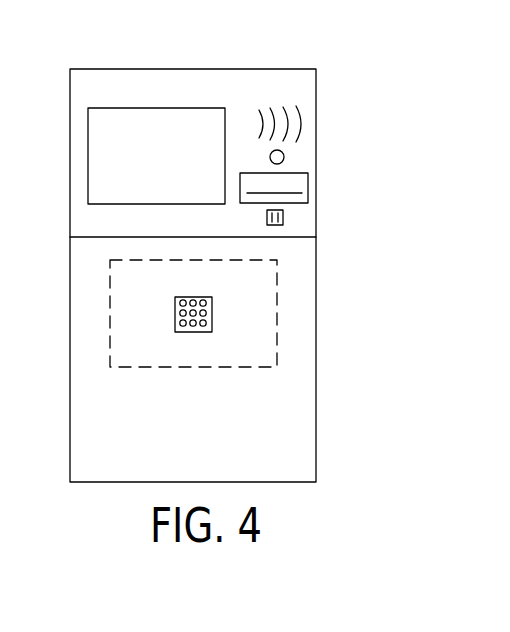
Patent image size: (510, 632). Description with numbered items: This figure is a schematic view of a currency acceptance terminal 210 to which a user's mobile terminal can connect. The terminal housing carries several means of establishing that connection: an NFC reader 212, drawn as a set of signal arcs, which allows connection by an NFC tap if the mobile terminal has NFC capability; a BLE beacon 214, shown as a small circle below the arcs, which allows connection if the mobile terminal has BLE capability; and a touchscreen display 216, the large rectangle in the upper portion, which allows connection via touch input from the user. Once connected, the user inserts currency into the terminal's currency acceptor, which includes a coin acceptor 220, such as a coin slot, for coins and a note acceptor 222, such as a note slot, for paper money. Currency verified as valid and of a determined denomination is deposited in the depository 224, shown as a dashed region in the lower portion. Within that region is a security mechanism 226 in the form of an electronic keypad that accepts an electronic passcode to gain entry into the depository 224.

The currency acceptance terminal 210 is at (316, 418).
The NFC reader 212 is at (310, 112).
The BLE beacon 214 is at (300, 155).
The touchscreen display 216 is at (158, 108).
The coin acceptor 220 is at (294, 219).
The note acceptor 222 is at (316, 181).
The depository 224 is at (277, 289).
The security mechanism 226 is at (212, 312).